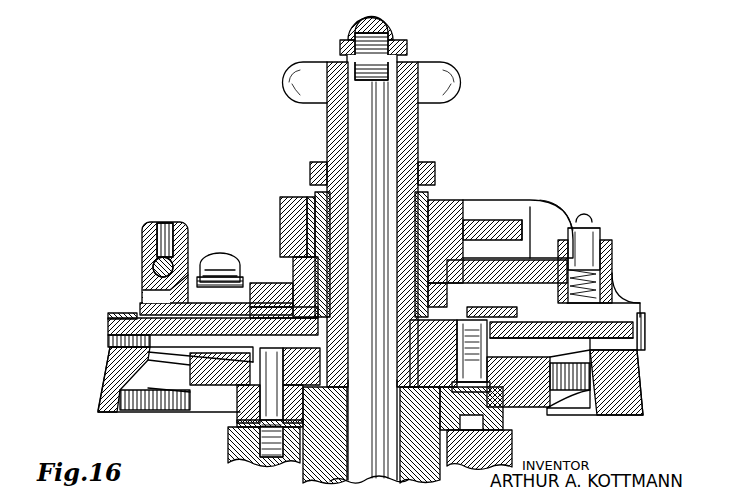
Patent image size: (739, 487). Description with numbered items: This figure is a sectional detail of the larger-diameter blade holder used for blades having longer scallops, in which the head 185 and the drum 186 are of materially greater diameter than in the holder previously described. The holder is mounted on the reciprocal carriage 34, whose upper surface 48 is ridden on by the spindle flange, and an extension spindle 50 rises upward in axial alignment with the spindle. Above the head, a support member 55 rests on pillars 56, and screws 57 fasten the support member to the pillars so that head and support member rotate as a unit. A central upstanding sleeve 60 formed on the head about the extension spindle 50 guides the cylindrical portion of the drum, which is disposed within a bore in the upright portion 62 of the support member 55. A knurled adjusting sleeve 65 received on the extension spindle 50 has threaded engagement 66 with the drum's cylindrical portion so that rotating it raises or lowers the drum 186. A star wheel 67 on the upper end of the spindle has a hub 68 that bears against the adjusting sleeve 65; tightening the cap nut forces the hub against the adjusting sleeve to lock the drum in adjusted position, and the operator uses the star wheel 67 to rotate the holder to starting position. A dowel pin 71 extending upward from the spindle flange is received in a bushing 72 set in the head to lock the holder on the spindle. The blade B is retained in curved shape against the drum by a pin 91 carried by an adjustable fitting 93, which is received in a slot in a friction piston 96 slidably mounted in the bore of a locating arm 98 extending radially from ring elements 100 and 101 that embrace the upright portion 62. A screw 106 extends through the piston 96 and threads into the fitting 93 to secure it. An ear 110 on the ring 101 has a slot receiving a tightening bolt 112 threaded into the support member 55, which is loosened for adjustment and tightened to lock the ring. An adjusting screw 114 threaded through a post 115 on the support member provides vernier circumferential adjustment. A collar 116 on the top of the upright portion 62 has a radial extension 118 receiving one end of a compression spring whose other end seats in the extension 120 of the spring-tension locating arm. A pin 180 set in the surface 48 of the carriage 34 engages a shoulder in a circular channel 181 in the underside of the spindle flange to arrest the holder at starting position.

The reciprocal carriage 34 is at (235, 447).
The upper surface 48 is at (492, 428).
The extension spindle 50 is at (368, 220).
The support member 55 is at (503, 307).
The pillars 56 is at (433, 353).
The screws 57 is at (471, 356).
The sleeve 60 is at (397, 266).
The upright portion 62 is at (310, 284).
The adjusting sleeve 65 is at (312, 165).
The threaded engagement 66 is at (412, 233).
The star wheel 67 is at (303, 63).
The hub 68 is at (420, 143).
The dowel pin 71 is at (260, 370).
The bushing 72 is at (284, 370).
The pin 91 is at (647, 324).
The adjustable fitting 93 is at (637, 303).
The friction pistons 96 is at (608, 236).
The locating arm 98 is at (543, 283).
The ring element 100 is at (307, 255).
The ring element 101 is at (445, 292).
The screw 106 is at (588, 221).
The ear 110 is at (265, 283).
The tightening bolt 112 is at (218, 254).
The adjusting screw 114 is at (142, 266).
The post 115 is at (141, 233).
The collar 116 is at (282, 199).
The radial extension 118 is at (513, 210).
The extension 120 is at (567, 204).
The pin 180 is at (242, 425).
The circular channel 181 is at (462, 418).
The head 185 is at (633, 407).
The drum 186 is at (108, 316).
The blade B is at (108, 333).